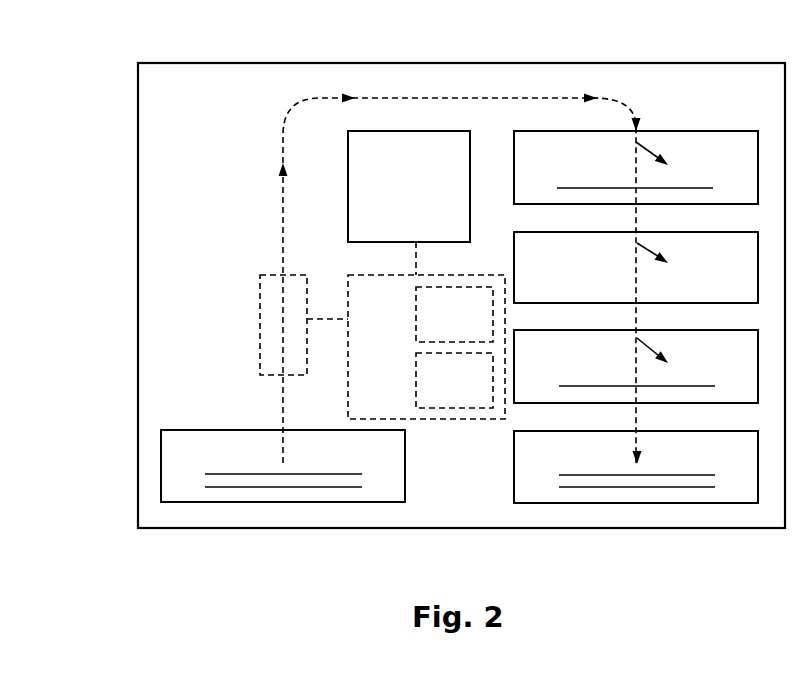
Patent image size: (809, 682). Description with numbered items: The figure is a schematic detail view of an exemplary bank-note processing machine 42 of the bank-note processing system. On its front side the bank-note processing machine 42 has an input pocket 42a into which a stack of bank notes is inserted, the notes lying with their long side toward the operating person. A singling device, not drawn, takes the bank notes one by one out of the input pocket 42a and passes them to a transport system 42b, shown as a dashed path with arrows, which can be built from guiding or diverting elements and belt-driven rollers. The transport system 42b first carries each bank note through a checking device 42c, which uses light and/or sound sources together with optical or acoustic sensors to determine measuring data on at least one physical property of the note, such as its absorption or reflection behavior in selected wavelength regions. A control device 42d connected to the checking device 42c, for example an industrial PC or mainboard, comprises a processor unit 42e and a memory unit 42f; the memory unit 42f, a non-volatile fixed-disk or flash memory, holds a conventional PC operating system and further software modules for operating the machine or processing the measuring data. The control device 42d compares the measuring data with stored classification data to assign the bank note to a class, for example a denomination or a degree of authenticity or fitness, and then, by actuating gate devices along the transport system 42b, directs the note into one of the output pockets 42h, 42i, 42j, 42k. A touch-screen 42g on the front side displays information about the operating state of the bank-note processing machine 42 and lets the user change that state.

The bank-note processing machine 42 is at (137, 156).
The input pocket 42a is at (283, 466).
The transport system 42b is at (438, 100).
The checking device 42c is at (259, 328).
The control device 42d is at (426, 347).
The processor unit 42e is at (454, 314).
The memory unit 42f is at (454, 380).
The touch-screen 42g is at (409, 203).
The output pocket 42h is at (636, 167).
The output pocket 42i is at (636, 267).
The output pocket 42j is at (636, 366).
The output pocket 42k is at (636, 467).